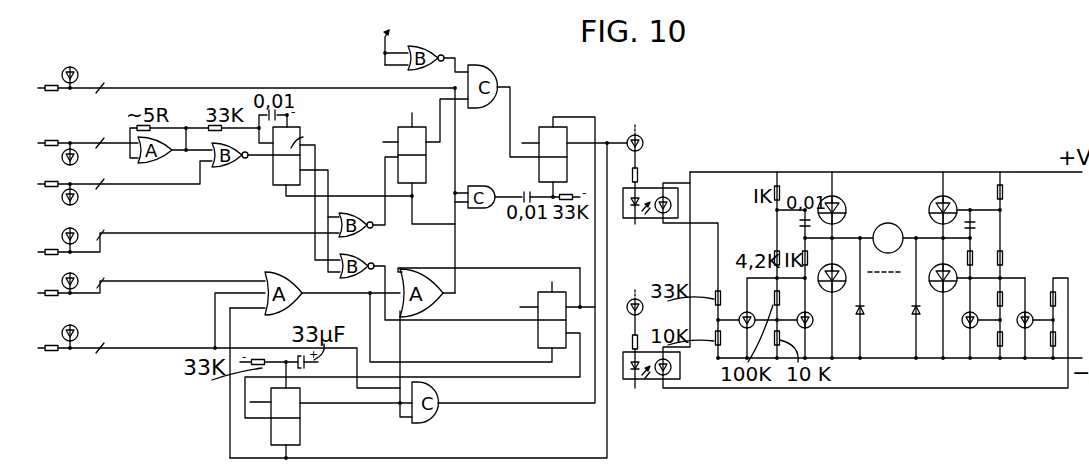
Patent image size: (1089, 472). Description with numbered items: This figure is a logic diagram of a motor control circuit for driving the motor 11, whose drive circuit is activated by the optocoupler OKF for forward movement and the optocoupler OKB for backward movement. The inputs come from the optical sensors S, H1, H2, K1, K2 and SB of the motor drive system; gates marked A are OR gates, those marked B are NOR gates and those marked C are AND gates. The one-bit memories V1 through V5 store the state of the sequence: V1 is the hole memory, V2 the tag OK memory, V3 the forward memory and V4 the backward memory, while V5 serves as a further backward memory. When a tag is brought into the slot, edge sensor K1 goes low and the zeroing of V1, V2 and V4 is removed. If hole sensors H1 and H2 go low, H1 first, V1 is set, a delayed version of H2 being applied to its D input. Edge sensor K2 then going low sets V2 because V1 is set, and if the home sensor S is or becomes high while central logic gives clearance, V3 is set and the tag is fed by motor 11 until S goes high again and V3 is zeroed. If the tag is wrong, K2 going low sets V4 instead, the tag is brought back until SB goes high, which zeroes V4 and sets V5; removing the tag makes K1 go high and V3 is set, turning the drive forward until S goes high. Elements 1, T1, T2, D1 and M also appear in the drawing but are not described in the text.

The bistable circuit 1 is at (309, 142).
The motor 11 is at (888, 223).
The hole memory V1 is at (309, 154).
The tag OK memory V2 is at (403, 145).
The forward memory V3 is at (544, 154).
The backward memory V4 is at (542, 311).
The backward memory V5 is at (275, 416).
The transistor T1 is at (649, 145).
The transistor T2 is at (747, 307).
The diode D1 is at (932, 299).
The motor M is at (888, 238).
The optocoupler OKF is at (650, 204).
The optocoupler OKB is at (653, 366).
The home sensor S is at (246, 75).
The hole sensor H1 is at (125, 186).
The hole sensor H2 is at (88, 146).
The edge sensor K1 is at (219, 340).
The edge sensor K2 is at (188, 233).
The optical sensor SB is at (151, 276).